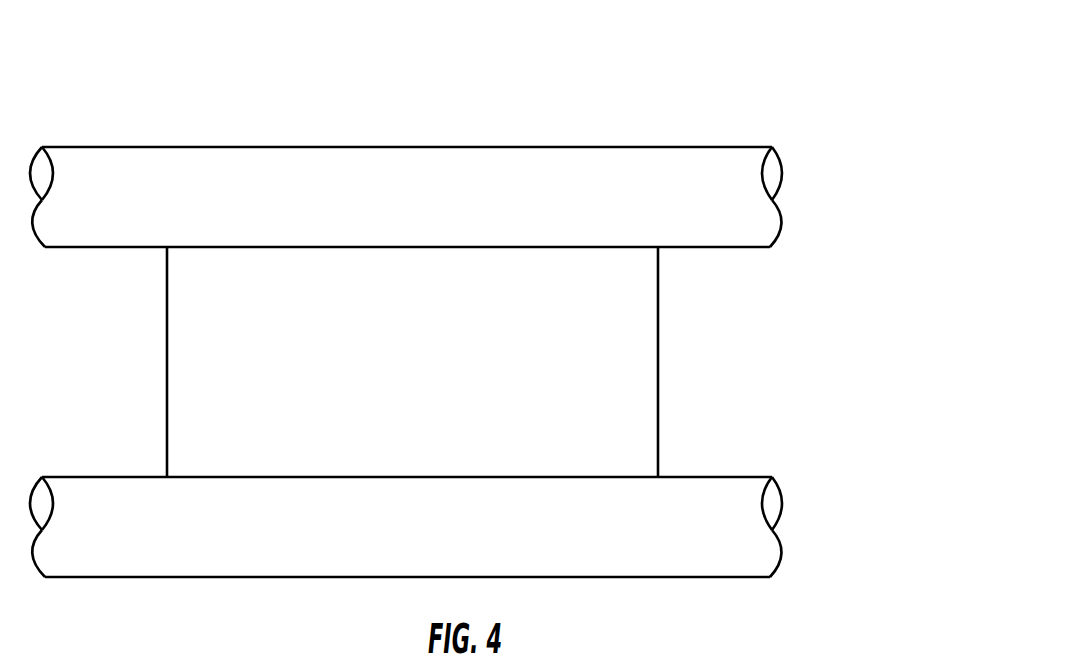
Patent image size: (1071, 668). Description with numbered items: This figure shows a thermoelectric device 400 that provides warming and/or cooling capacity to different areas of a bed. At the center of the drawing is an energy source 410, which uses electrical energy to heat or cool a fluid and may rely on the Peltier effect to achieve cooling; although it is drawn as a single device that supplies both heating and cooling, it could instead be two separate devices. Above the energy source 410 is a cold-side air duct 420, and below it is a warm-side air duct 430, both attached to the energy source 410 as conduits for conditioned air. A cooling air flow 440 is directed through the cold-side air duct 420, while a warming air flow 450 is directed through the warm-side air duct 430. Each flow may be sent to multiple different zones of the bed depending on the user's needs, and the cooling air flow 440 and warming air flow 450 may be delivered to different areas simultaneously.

The thermoelectric device 400 is at (727, 90).
The energy source 410 is at (383, 365).
The cold-side air duct 420 is at (445, 208).
The warm-side air duct 430 is at (498, 540).
The cooling air flow 440 is at (797, 198).
The warming air flow 450 is at (795, 533).